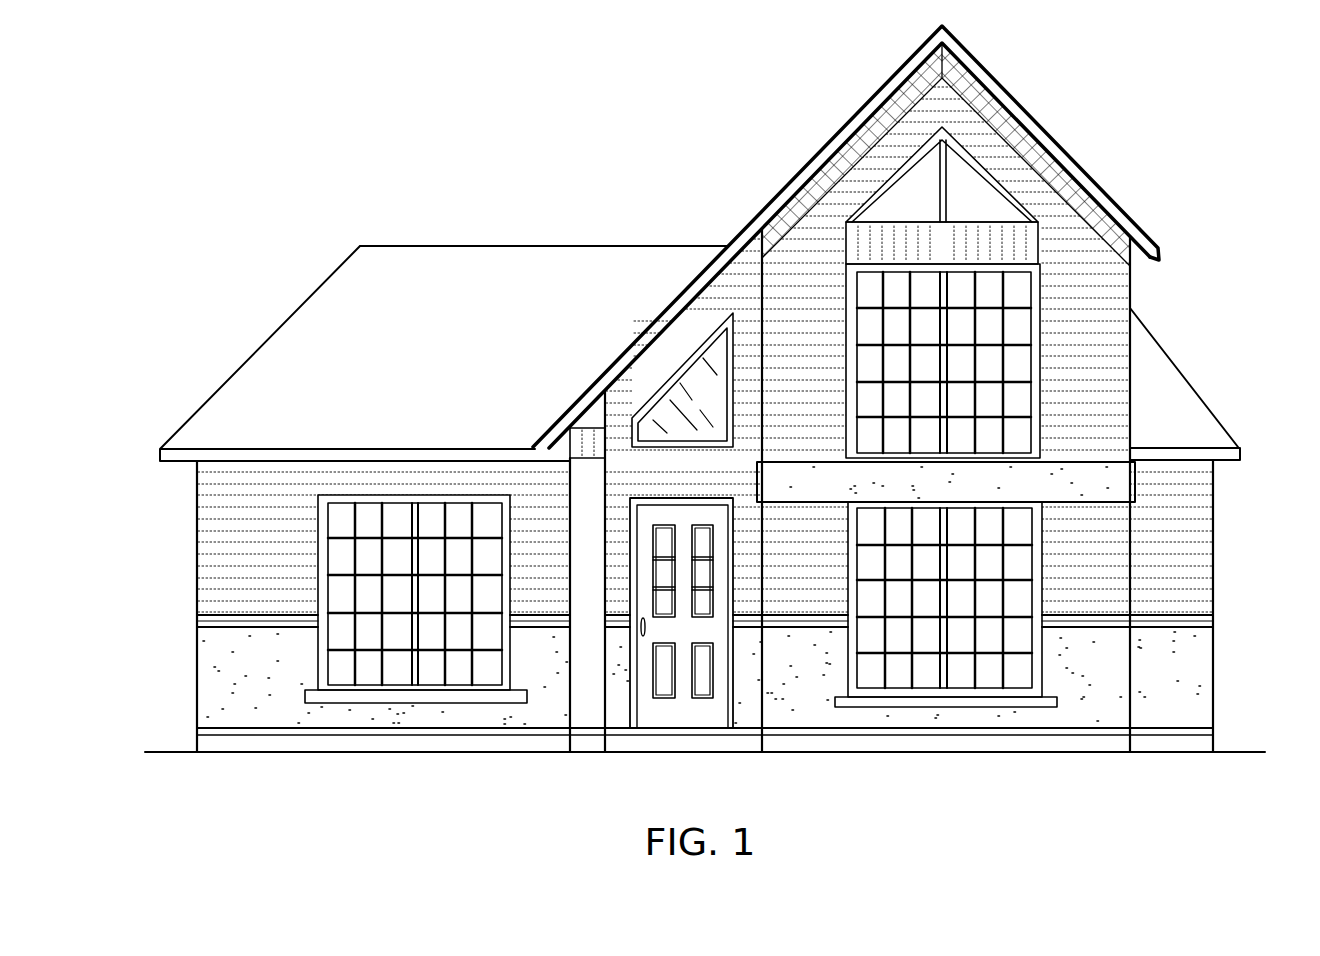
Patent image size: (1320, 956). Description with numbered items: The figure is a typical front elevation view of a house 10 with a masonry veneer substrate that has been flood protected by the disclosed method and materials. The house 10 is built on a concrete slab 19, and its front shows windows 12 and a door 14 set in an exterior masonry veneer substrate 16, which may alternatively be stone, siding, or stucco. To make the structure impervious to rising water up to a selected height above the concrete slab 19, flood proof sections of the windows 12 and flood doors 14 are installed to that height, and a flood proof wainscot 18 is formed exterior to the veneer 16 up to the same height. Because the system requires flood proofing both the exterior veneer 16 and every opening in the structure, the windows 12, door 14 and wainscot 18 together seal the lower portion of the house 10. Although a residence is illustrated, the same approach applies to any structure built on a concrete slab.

The house 10 is at (724, 425).
The windows 12 is at (466, 672).
The door 14 is at (715, 718).
The exterior masonry veneer substrate 16 is at (1213, 540).
The flood proof wainscot 18 is at (1197, 683).
The concrete slab 19 is at (1167, 743).